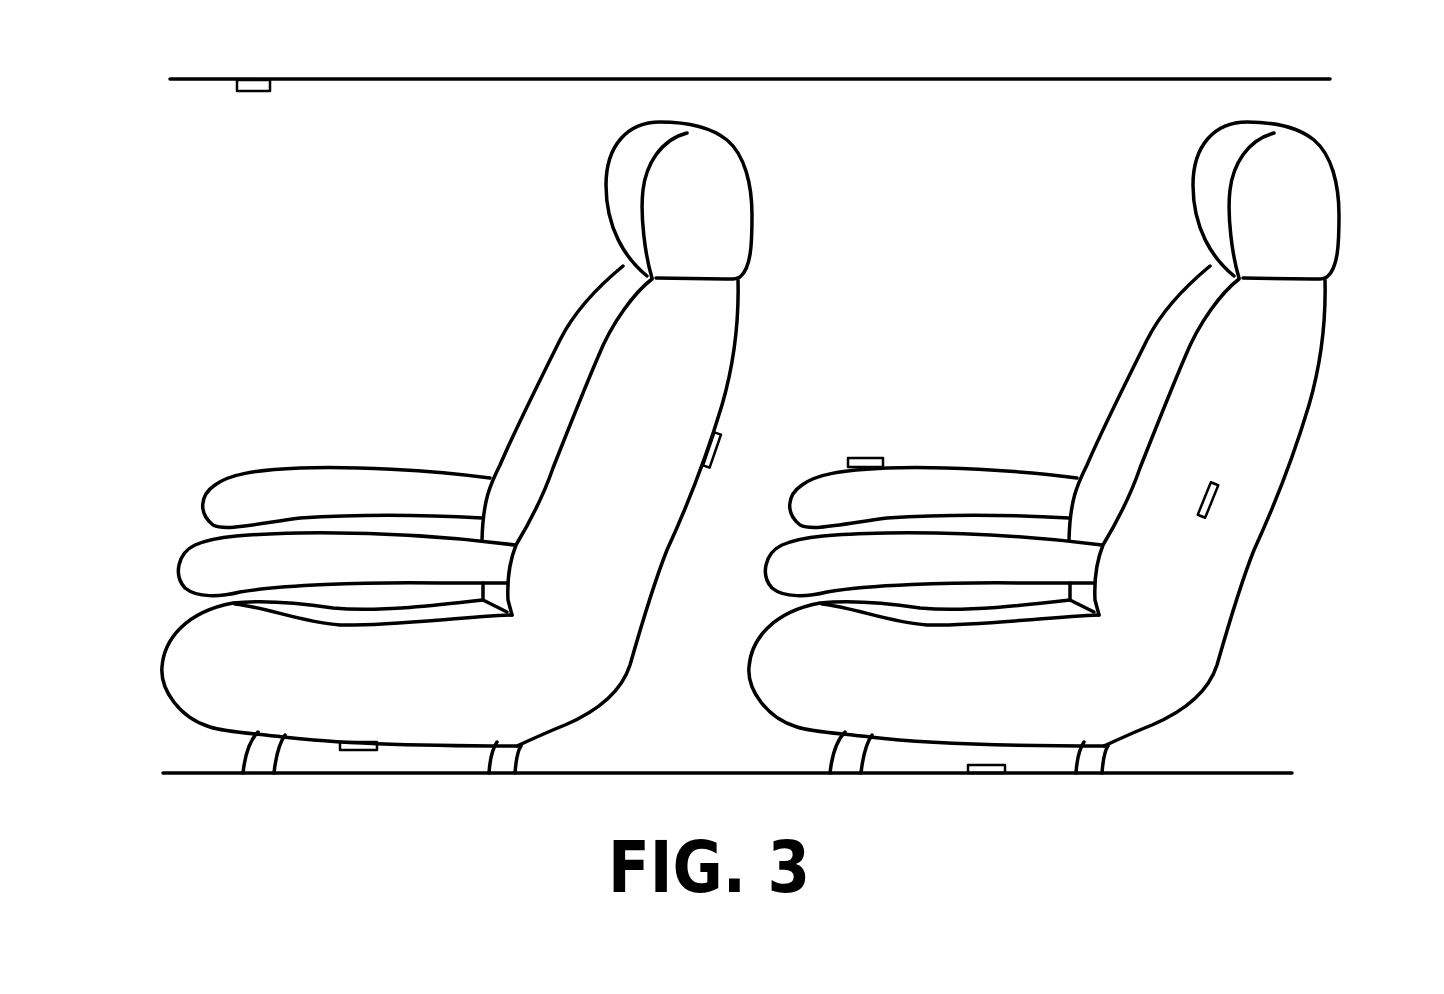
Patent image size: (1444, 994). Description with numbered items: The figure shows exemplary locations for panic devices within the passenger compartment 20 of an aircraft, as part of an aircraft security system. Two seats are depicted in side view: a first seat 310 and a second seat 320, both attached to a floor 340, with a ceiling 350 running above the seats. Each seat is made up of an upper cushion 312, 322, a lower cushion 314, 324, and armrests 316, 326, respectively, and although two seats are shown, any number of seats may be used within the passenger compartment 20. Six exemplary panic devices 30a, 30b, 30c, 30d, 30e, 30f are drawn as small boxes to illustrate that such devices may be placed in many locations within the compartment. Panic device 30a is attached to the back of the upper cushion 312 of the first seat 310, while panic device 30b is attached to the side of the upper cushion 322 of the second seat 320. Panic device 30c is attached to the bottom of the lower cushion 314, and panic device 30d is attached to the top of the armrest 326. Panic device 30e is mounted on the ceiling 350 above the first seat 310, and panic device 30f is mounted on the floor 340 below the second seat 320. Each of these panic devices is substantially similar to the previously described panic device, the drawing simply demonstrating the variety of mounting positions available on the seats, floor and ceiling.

The passenger compartment 20 is at (198, 190).
The panic device 30a is at (718, 437).
The panic device 30b is at (1200, 515).
The panic device 30c is at (377, 748).
The panic device 30d is at (857, 458).
The panic device 30e is at (270, 91).
The panic device 30f is at (968, 768).
The first seat 310 is at (468, 448).
The upper cushion 312 is at (735, 362).
The lower cushion 314 is at (167, 703).
The armrests 316 is at (200, 508).
The second seat 320 is at (1060, 447).
The upper cushion 322 is at (1332, 323).
The lower cushion 324 is at (760, 713).
The armrests 326 is at (783, 498).
The floor 340 is at (1277, 772).
The ceiling 350 is at (907, 80).